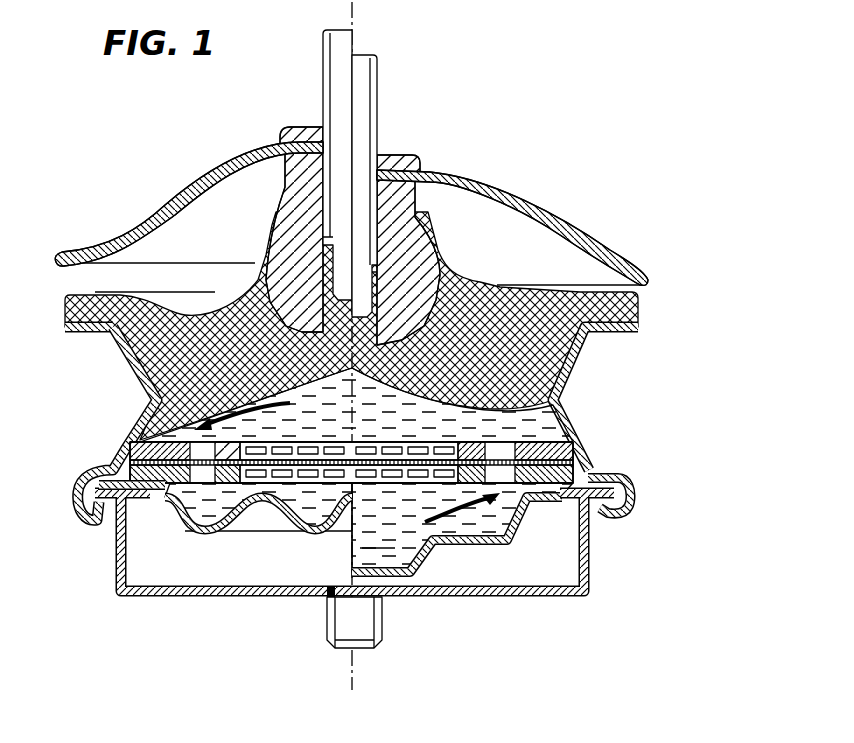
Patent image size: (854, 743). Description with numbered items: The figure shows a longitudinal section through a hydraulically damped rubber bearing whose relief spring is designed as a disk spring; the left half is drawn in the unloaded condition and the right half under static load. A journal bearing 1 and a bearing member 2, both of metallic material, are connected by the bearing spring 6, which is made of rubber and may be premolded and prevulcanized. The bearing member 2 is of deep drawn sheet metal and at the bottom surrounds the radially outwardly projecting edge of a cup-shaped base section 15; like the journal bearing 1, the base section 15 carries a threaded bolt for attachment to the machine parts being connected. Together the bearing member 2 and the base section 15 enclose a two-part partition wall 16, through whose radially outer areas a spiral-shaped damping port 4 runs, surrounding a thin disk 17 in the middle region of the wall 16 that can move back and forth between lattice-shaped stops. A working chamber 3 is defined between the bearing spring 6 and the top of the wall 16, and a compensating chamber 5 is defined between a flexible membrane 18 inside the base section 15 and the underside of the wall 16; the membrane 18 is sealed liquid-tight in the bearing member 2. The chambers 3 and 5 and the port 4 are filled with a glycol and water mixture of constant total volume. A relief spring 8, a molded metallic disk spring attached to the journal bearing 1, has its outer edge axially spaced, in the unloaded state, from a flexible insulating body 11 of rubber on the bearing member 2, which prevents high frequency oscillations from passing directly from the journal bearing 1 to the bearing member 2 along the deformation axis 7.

The journal bearing 1 is at (362, 112).
The bearing member 2 is at (630, 488).
The working chamber 3 is at (542, 405).
The damping port 4 is at (590, 470).
The compensating chamber 5 is at (397, 538).
The bearing spring 6 is at (490, 283).
The deformation axis 7 is at (352, 17).
The relief spring 8 is at (478, 172).
The flexible insulating body 11 is at (630, 302).
The base section 15 is at (590, 590).
The partition wall 16 is at (125, 440).
The thin disk 17 is at (263, 500).
The flexible membrane 18 is at (303, 528).